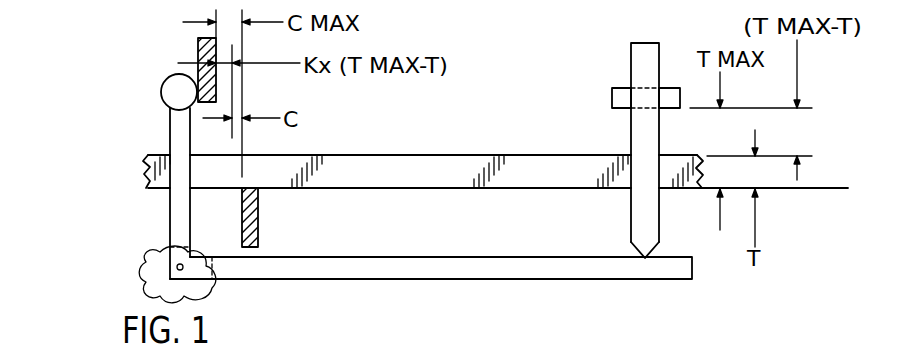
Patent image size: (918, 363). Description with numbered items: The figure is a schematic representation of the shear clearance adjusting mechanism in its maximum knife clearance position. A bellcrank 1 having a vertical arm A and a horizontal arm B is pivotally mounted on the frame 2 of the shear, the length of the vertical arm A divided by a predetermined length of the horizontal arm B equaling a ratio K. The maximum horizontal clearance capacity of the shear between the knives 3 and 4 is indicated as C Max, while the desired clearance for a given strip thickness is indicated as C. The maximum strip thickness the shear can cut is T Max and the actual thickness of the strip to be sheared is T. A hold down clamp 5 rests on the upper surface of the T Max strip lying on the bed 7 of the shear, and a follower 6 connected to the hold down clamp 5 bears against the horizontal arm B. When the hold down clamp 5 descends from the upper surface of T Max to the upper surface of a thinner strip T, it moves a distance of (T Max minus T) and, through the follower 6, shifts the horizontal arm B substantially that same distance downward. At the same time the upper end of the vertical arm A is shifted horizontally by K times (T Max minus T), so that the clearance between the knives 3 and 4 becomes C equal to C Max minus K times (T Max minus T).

The bellcrank 1 is at (404, 281).
The frame 2 is at (153, 262).
The knife 3 is at (198, 50).
The knife 4 is at (260, 220).
The hold down clamp 5 is at (616, 96).
The follower 6 is at (644, 242).
The bed 7 is at (827, 189).
The vertical arm A is at (178, 132).
The horizontal arm B is at (335, 270).